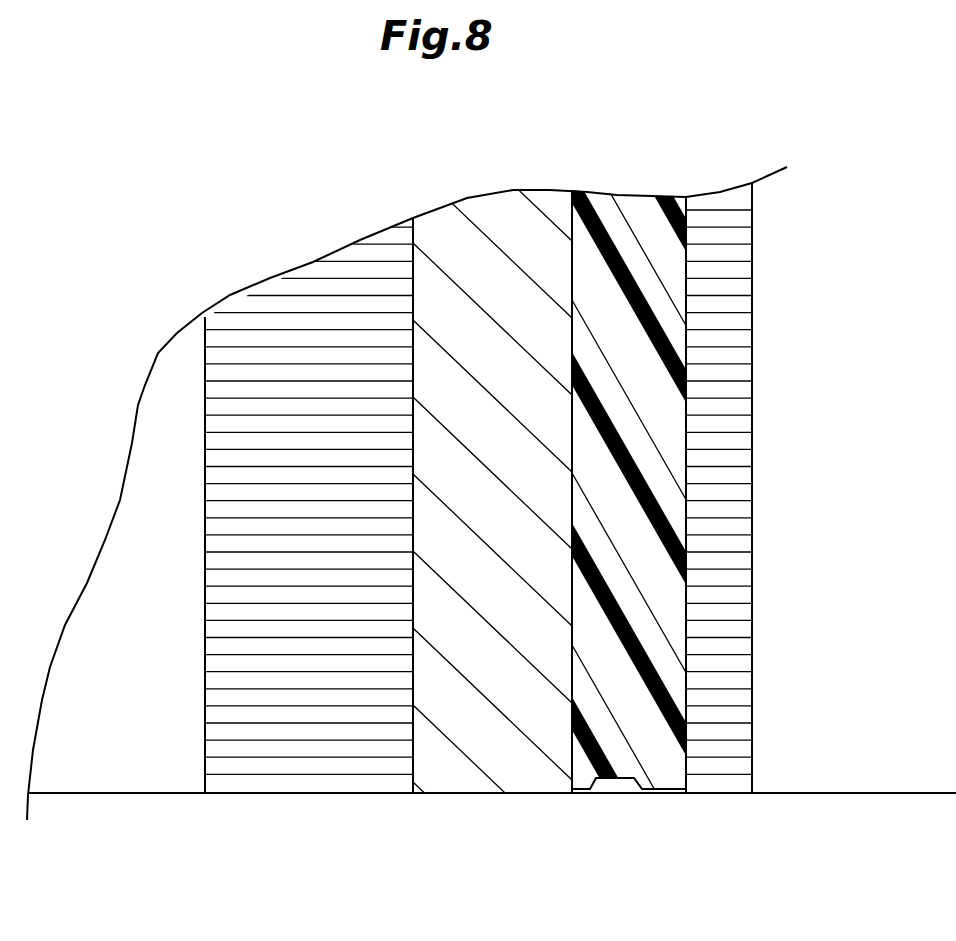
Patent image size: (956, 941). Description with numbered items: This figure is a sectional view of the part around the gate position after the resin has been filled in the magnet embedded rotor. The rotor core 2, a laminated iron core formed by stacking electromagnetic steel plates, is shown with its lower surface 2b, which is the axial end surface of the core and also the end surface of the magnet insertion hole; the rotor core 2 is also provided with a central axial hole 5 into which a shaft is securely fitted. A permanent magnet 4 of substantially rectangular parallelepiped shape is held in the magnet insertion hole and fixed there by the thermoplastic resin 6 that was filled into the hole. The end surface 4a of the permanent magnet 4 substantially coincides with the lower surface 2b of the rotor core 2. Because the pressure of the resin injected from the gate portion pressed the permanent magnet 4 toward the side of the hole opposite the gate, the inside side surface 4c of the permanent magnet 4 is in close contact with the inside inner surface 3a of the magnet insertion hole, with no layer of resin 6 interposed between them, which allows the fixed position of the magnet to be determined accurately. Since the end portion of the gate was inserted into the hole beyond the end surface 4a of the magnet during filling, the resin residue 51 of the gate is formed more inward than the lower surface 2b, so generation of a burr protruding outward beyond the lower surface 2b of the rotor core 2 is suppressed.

The rotor core 2 is at (491, 531).
The lower surface of the rotor core 2b is at (303, 800).
The inside inner surface of the magnet insertion hole 3a is at (413, 365).
The permanent magnet 4 is at (496, 511).
The end surface of the permanent magnet 4a is at (533, 795).
The inside side surface of the permanent magnet 4c is at (418, 733).
The axial hole 5 is at (207, 757).
The projection 51 is at (613, 787).
The resin 6 is at (672, 256).